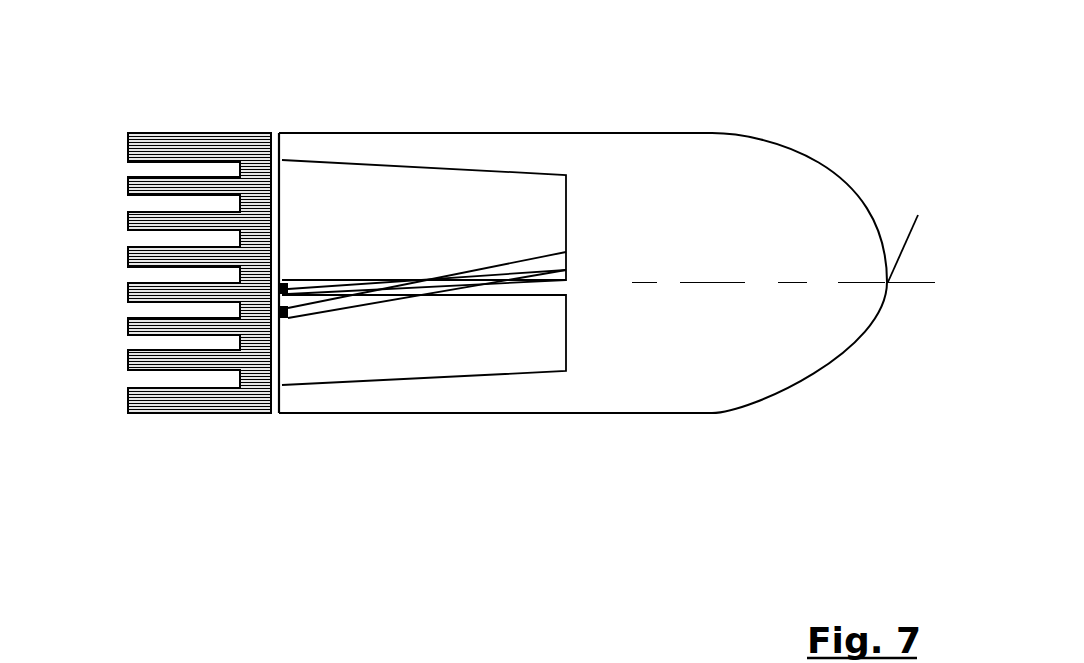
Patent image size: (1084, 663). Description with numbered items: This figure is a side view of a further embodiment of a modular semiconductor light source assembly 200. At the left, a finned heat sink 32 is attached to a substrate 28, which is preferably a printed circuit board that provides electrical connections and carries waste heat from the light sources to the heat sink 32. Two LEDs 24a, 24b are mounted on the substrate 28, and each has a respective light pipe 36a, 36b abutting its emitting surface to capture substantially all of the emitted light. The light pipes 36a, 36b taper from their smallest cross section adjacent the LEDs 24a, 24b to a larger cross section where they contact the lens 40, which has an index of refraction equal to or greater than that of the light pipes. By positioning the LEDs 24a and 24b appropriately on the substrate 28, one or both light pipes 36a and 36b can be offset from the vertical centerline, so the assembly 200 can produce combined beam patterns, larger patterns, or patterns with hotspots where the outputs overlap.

The modular semiconductor light source assembly 200 is at (204, 448).
The heat sink 32 is at (163, 138).
The substrate 28 is at (298, 237).
The LED 24a is at (287, 282).
The LED 24b is at (284, 322).
The light pipe 36a is at (427, 173).
The light pipe 36b is at (360, 318).
The lens 40 is at (607, 310).